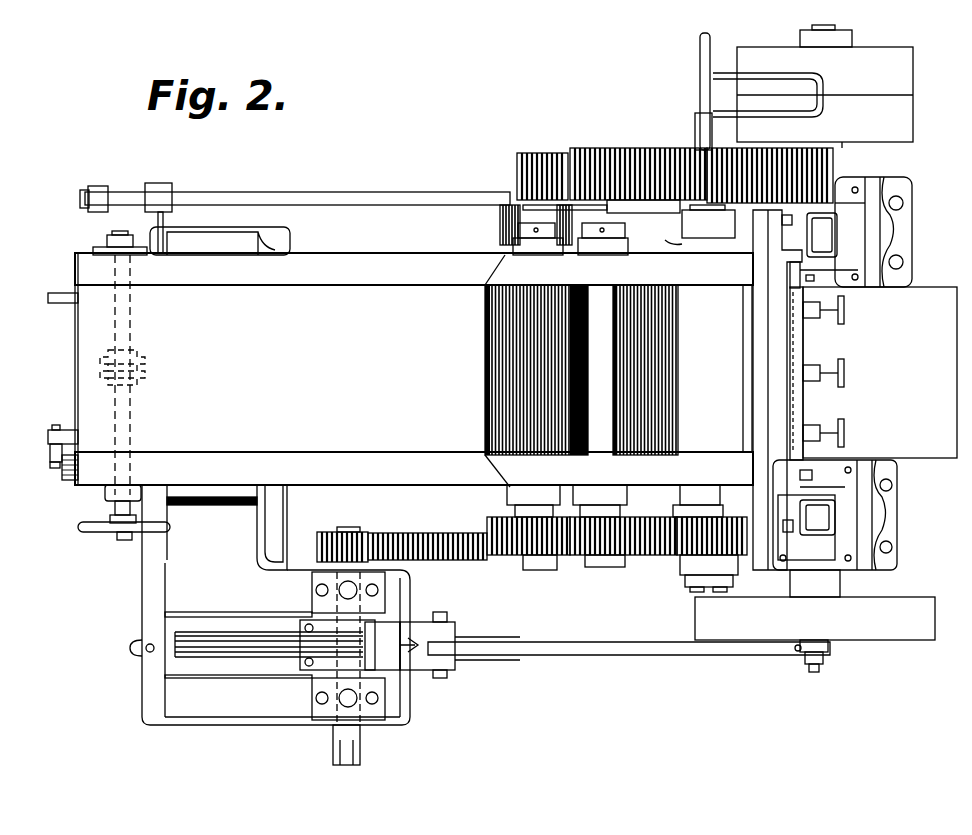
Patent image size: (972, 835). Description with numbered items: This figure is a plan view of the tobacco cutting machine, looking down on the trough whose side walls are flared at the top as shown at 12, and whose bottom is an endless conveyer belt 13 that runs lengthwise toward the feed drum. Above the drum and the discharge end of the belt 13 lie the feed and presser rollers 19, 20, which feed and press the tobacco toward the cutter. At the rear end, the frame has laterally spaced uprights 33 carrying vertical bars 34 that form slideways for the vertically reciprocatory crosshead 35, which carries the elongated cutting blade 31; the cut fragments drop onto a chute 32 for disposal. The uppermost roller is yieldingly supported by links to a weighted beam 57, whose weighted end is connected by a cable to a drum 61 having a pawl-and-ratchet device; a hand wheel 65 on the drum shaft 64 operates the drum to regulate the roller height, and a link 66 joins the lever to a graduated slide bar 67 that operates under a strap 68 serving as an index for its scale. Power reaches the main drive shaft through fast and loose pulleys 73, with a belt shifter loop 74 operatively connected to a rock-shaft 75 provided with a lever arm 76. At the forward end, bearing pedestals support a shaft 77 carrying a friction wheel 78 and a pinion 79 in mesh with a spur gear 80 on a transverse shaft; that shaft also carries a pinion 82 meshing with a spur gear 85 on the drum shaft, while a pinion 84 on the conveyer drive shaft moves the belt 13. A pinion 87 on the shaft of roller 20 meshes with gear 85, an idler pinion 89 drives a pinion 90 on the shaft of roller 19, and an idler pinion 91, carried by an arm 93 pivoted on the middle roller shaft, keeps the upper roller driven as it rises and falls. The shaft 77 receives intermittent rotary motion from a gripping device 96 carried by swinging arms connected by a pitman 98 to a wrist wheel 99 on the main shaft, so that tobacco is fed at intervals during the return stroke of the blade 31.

The flared top of side walls 12 is at (447, 277).
The endless conveyer belt 13 is at (414, 369).
The feed and presser roller 19 is at (498, 358).
The feed and presser roller 20 is at (663, 378).
The cutting blade 31 is at (806, 328).
The chute 32 is at (873, 373).
The uprights 33 is at (758, 240).
The vertical bars 34 is at (782, 220).
The crosshead 35 is at (800, 462).
The weighted beam 57 is at (62, 303).
The drum 61 is at (148, 372).
The drum shaft 64 is at (133, 420).
The hand wheel 65 is at (110, 530).
The link 66 is at (48, 452).
The graduated slide bar 67 is at (66, 480).
The strap 68 is at (55, 462).
The fast and loose pulleys 73 is at (910, 113).
The belt shifter loop 74 is at (830, 92).
The rock-shaft 75 is at (345, 192).
The lever arm 76 is at (96, 186).
The shaft 77 is at (360, 735).
The friction wheel 78 is at (255, 650).
The pinion 79 is at (322, 532).
The spur gear 80 is at (447, 533).
The pinion 82 is at (528, 153).
The pinion 84 is at (500, 228).
The spur gear 85 is at (585, 148).
The pinion 87 is at (638, 158).
The idler pinion 89 is at (605, 560).
The pinion 90 is at (512, 557).
The idler pinion 91 is at (700, 560).
The arm 93 is at (680, 248).
The gripping device 96 is at (412, 652).
The pitman 98 is at (605, 655).
The wrist wheel 99 is at (909, 640).